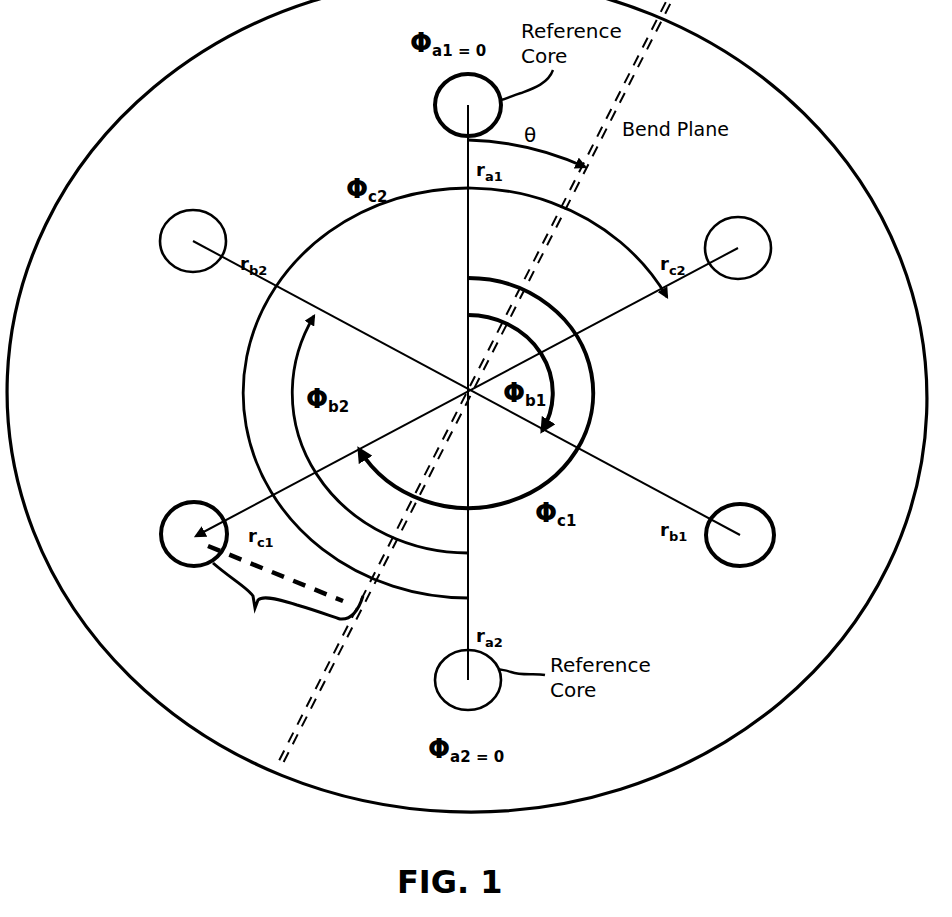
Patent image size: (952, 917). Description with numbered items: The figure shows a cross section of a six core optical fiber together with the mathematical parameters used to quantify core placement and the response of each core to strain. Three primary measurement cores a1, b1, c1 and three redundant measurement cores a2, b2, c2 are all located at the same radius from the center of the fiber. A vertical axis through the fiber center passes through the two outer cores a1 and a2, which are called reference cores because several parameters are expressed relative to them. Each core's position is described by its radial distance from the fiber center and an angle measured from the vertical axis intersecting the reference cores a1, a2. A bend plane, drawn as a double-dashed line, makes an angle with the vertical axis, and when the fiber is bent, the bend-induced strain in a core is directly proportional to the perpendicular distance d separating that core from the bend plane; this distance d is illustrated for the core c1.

The primary measurement reference core a1 is at (453, 105).
The redundant measurement reference core a2 is at (453, 680).
The primary measurement core b1 is at (754, 539).
The redundant measurement core b2 is at (180, 241).
The primary measurement core c1 is at (182, 544).
The redundant measurement core c2 is at (750, 246).
The perpendicular distance from bend plane d is at (285, 596).